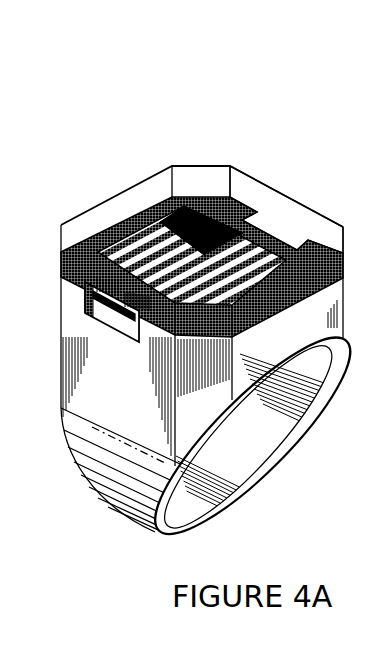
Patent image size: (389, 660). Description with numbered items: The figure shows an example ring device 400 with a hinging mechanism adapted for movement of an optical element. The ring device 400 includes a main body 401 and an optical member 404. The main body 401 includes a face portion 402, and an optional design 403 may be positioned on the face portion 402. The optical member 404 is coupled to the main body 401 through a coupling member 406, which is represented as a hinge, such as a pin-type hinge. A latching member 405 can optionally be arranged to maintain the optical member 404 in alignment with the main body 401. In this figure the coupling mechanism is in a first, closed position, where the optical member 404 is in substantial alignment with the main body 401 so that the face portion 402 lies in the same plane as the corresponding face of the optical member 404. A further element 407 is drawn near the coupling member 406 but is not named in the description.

The ring device 400 is at (108, 521).
The main body 401 is at (210, 392).
The face portion 402 is at (203, 203).
The design 403 is at (163, 263).
The optical member 404 is at (322, 233).
The latching member 405 is at (273, 222).
The coupling member 406 is at (122, 290).
The connector housing 407 is at (92, 285).